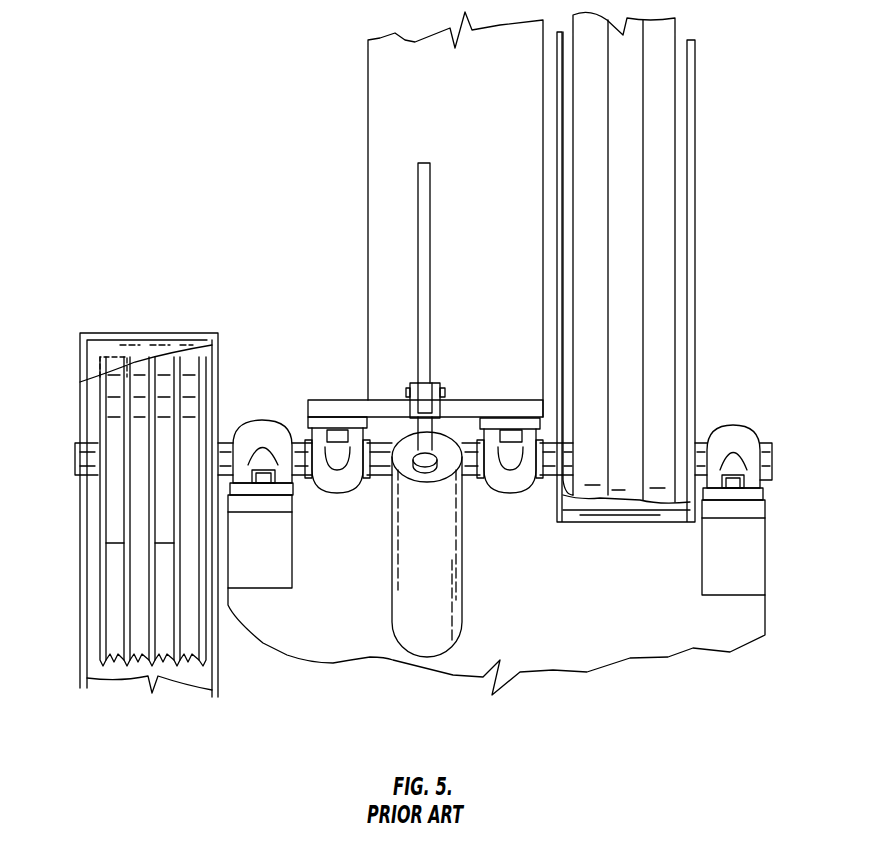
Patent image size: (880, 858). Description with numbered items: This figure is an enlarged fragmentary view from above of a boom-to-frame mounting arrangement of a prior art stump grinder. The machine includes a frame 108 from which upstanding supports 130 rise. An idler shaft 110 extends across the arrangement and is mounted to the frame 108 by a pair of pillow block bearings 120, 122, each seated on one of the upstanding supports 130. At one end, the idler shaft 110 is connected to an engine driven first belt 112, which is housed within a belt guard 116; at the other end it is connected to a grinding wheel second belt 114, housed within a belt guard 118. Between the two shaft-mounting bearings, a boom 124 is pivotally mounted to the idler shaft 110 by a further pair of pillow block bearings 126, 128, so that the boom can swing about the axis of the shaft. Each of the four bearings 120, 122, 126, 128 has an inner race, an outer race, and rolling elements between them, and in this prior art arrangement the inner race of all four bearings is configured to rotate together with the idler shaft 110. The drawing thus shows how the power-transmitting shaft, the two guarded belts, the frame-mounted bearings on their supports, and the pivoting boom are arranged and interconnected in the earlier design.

The frame 108 is at (632, 662).
The idler shaft 110 is at (772, 447).
The first belt 112 is at (103, 588).
The second belt 114 is at (680, 247).
The belt guard 116 is at (80, 520).
The belt guard 118 is at (693, 160).
The pillow block bearing 120 is at (258, 420).
The pillow block bearing 122 is at (733, 428).
The boom 124 is at (368, 172).
The pillow block bearing 126 is at (333, 493).
The pillow block bearing 128 is at (512, 495).
The upstanding supports 130 is at (292, 583).